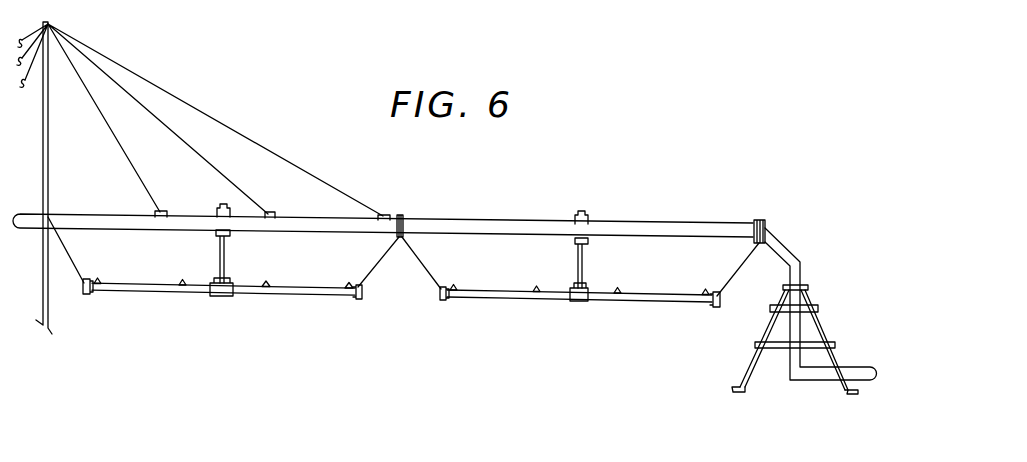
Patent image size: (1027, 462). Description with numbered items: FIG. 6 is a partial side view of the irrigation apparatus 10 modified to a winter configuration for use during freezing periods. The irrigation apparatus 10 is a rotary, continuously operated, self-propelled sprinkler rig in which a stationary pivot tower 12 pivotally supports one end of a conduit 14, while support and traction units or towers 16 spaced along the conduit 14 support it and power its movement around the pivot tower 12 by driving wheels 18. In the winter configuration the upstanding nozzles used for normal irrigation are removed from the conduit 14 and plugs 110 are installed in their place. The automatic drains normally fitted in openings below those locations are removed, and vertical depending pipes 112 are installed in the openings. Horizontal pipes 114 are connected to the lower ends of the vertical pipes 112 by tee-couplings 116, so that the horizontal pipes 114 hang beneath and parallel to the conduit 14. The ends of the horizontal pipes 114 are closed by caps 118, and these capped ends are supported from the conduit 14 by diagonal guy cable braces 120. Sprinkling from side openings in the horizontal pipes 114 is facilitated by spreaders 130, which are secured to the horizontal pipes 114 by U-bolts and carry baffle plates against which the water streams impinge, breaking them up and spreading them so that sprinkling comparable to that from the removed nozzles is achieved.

The irrigation apparatus 10 is at (672, 223).
The pivot tower 12 is at (810, 298).
The conduit 14 is at (680, 232).
The support and traction unit or tower 16 is at (50, 33).
The wheel 18 is at (83, 294).
The plug 110 is at (223, 205).
The vertical depending pipe 112 is at (227, 258).
The horizontal pipe 114 is at (296, 290).
The tee-coupling 116 is at (222, 298).
The cap 118 is at (442, 300).
The diagonal guy cable brace 120 is at (68, 258).
The spreader 130 is at (182, 290).